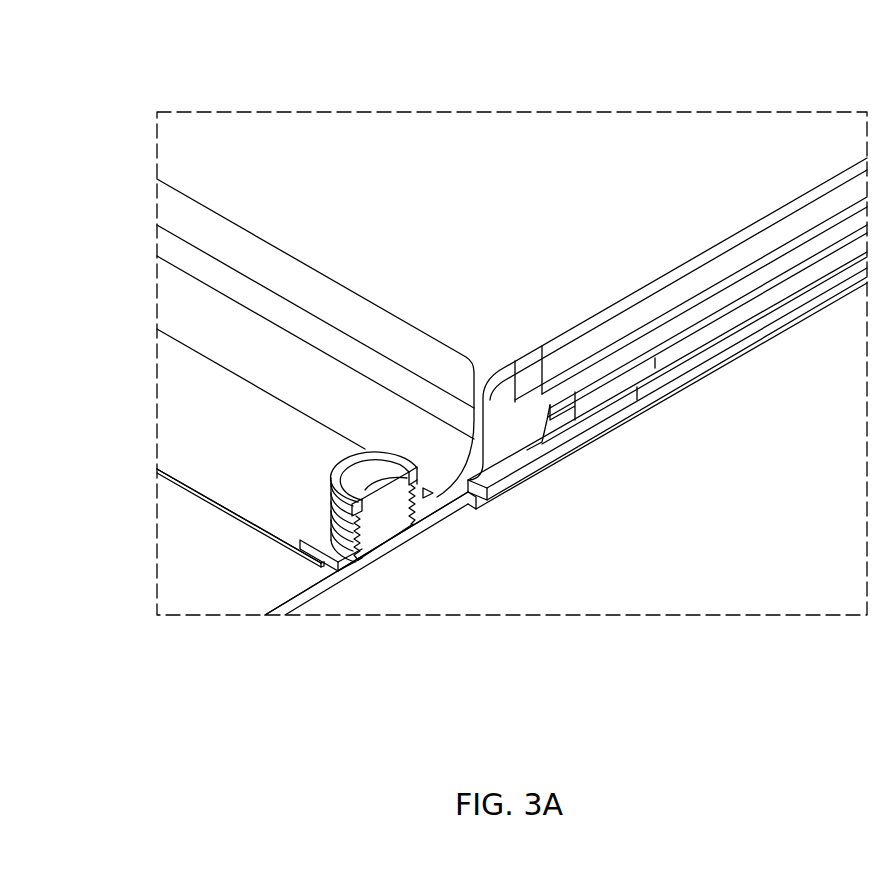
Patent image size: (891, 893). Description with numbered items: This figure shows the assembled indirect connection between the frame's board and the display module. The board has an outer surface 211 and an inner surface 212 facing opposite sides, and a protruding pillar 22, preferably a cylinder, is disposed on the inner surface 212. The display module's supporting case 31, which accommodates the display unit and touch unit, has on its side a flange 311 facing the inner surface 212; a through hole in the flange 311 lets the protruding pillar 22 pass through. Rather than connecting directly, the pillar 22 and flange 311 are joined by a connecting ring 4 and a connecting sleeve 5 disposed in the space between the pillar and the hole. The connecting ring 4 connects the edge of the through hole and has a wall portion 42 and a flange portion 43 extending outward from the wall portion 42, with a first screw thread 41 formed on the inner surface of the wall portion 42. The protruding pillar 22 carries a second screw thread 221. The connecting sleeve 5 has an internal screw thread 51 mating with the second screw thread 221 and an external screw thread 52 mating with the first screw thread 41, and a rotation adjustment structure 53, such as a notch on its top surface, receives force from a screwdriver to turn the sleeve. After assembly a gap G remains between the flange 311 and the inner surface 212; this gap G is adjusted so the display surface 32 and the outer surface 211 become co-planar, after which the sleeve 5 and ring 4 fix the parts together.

The supporting case 31 is at (608, 230).
The display surface 32 is at (523, 481).
The outer surface 211 is at (457, 515).
The second screw thread 221 is at (457, 503).
The inner surface 212 is at (194, 510).
The flange 311 is at (240, 520).
The connecting sleeve 5 is at (391, 363).
The rotation adjustment structure 53 is at (355, 456).
The internal screw thread 51 is at (397, 462).
The external screw thread 52 is at (433, 473).
The protruding pillar 22 is at (375, 483).
The connecting ring 4 is at (313, 637).
The first screw thread 41 is at (374, 526).
The wall portion 42 is at (323, 535).
The flange portion 43 is at (333, 550).
The gap G is at (312, 577).